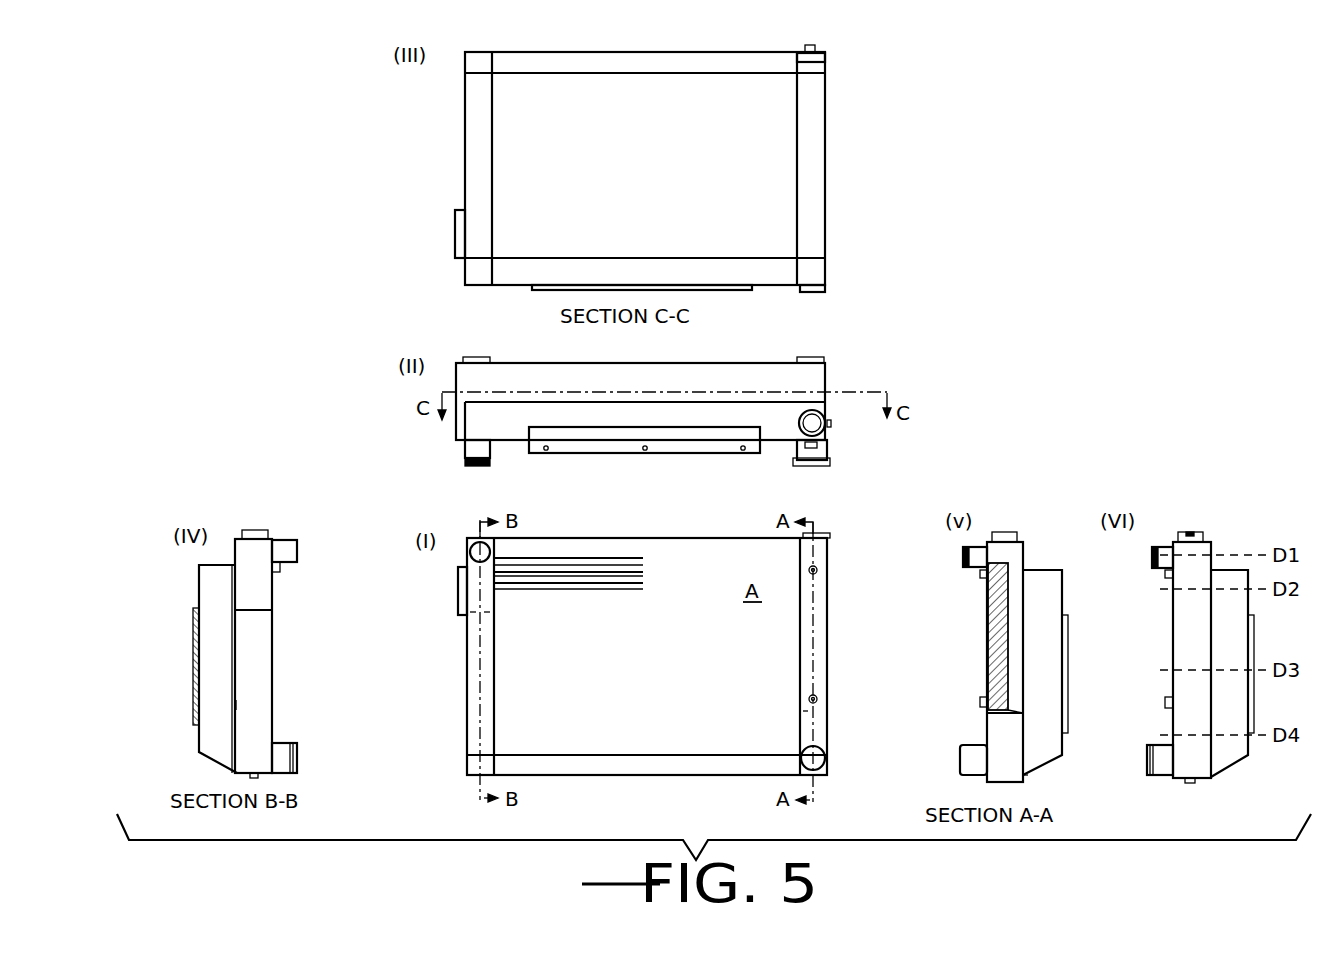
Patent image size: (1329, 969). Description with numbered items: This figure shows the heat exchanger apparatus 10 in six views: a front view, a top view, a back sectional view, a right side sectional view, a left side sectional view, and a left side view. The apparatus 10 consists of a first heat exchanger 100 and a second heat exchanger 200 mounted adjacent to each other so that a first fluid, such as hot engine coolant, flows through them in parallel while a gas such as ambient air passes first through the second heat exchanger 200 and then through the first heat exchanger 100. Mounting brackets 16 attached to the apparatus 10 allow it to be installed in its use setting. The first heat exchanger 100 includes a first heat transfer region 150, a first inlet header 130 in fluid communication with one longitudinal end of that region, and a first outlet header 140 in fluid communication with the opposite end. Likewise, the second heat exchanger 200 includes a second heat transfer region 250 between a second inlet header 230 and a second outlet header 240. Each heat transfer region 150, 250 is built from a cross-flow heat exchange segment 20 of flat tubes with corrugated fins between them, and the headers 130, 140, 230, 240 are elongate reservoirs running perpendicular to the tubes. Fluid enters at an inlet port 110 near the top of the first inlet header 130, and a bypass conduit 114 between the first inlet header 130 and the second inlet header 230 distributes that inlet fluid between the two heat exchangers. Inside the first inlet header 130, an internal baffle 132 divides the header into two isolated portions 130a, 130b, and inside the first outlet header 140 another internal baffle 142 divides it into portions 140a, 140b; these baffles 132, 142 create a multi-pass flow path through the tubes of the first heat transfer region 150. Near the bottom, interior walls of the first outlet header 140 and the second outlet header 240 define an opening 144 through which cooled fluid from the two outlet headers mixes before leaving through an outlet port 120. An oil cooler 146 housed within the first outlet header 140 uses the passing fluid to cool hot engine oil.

The heat exchanger apparatus 10 is at (922, 292).
The mounting brackets 16 is at (743, 290).
The cross-flow heat exchange segment 20 is at (556, 604).
The first heat exchanger 100 is at (1005, 611).
The inlet port 110 is at (722, 509).
The bypass conduit 114 is at (458, 218).
The outlet port 120 is at (722, 607).
The first inlet header 130 is at (470, 722).
The first portion of first inlet header 130a is at (276, 526).
The second portion of first inlet header 130b is at (252, 705).
The internal baffle 132 is at (470, 623).
The first outlet header 140 is at (820, 610).
The first portion of first outlet header 140a is at (970, 556).
The second portion of first outlet header 140b is at (997, 728).
The internal baffle 142 is at (818, 712).
The opening 144 is at (1027, 765).
The oil cooler 146 is at (995, 618).
The first heat transfer region 150 is at (647, 656).
The second heat exchanger 200 is at (861, 576).
The second inlet header 230 is at (470, 243).
The second outlet header 240 is at (818, 130).
The second heat transfer region 250 is at (645, 168).